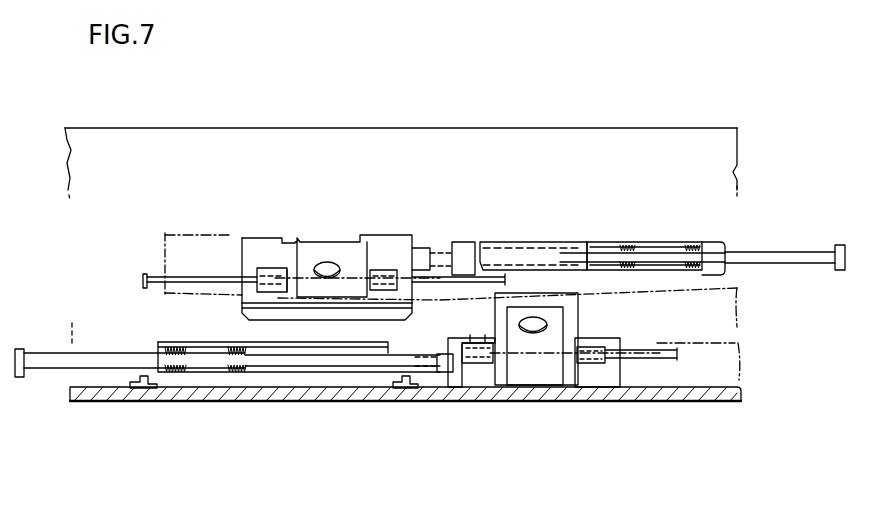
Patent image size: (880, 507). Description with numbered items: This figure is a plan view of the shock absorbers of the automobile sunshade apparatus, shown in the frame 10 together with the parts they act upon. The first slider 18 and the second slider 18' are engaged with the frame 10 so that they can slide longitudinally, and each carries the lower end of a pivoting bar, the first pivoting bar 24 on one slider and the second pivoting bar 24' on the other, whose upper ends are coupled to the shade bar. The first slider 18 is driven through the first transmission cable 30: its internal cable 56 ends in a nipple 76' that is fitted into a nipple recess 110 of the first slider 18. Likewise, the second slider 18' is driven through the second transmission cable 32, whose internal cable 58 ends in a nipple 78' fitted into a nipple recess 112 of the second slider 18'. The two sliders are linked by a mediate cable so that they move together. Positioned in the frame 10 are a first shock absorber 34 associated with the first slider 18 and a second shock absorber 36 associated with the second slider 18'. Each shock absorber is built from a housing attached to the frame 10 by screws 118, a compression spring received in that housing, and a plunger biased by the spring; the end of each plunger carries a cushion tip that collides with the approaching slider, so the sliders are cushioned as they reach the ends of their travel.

The frame 10 is at (396, 128).
The first slider 18 is at (341, 247).
The second slider 18' is at (575, 372).
The first pivoting bar 24 is at (451, 251).
The second pivoting bar 24' is at (698, 397).
The first transmission cable 30 is at (161, 277).
The second transmission cable 32 is at (482, 372).
The first shock absorber 34 is at (555, 242).
The second shock absorber 36 is at (315, 372).
The internal cable 56 is at (193, 277).
The internal cable 58 is at (458, 345).
The nipple 76' is at (289, 233).
The nipple 78' is at (475, 322).
The nipple recess 110 is at (265, 268).
The nipple recess 112 is at (463, 372).
The screws 118 is at (146, 392).